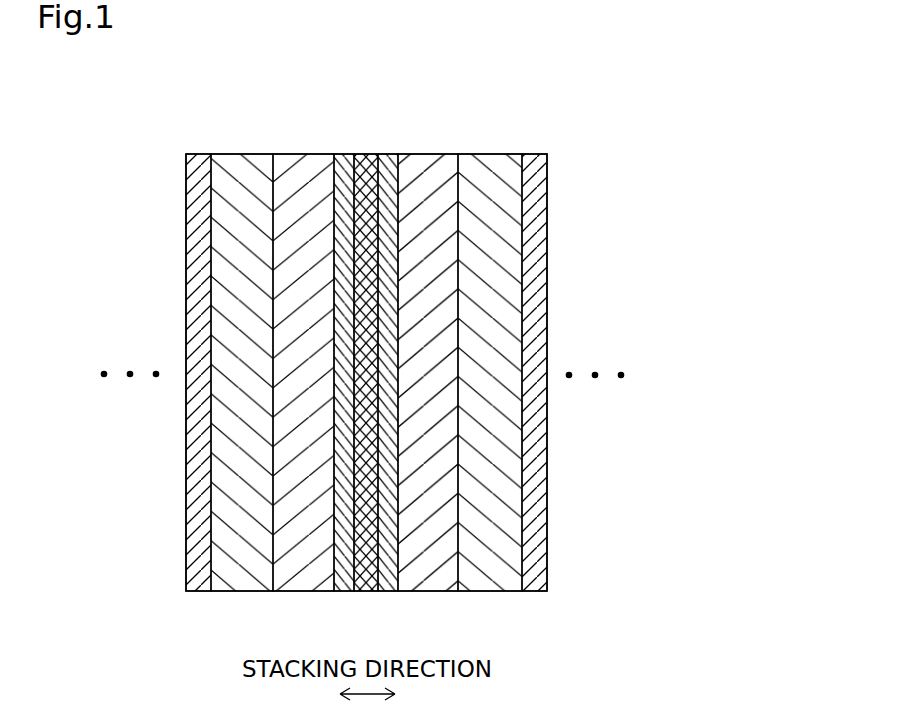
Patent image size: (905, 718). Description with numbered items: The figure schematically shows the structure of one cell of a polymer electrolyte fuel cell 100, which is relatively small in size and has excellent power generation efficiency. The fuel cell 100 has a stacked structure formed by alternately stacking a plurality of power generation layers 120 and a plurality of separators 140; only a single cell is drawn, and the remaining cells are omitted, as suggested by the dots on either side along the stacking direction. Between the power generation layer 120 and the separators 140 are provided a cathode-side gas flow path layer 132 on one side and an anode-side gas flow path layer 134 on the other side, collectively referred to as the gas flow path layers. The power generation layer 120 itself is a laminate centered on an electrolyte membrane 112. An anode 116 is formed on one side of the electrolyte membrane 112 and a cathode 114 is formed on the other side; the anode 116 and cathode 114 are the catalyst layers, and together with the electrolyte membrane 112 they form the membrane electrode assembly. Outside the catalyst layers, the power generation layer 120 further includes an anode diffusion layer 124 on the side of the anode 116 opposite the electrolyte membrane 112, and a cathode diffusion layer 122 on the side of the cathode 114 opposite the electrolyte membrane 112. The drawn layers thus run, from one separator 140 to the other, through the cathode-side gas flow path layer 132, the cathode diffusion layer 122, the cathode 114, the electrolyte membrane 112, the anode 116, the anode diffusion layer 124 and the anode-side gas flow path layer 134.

The fuel cell 100 is at (549, 53).
The electrolyte membrane 112 is at (365, 153).
The cathode 114 is at (345, 153).
The anode 116 is at (388, 153).
The power generation layer 120 is at (458, 595).
The cathode diffusion layer 122 is at (303, 153).
The anode diffusion layer 124 is at (427, 153).
The cathode-side gas flow path layer 132 is at (242, 153).
The anode-side gas flow path layer 134 is at (490, 153).
The separator 140 is at (201, 153).